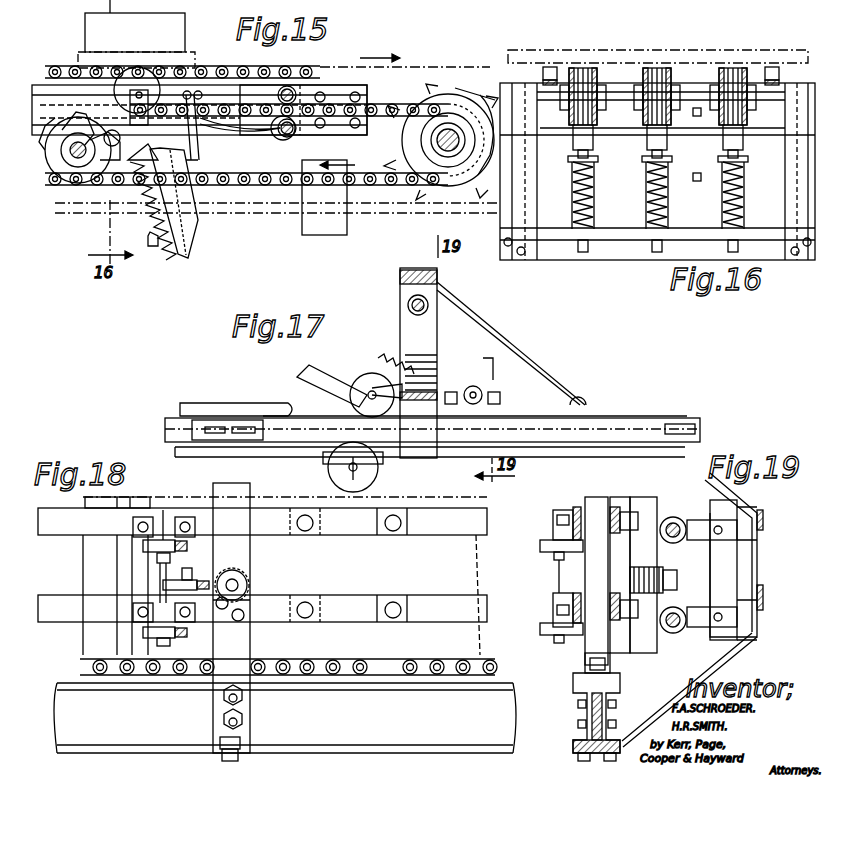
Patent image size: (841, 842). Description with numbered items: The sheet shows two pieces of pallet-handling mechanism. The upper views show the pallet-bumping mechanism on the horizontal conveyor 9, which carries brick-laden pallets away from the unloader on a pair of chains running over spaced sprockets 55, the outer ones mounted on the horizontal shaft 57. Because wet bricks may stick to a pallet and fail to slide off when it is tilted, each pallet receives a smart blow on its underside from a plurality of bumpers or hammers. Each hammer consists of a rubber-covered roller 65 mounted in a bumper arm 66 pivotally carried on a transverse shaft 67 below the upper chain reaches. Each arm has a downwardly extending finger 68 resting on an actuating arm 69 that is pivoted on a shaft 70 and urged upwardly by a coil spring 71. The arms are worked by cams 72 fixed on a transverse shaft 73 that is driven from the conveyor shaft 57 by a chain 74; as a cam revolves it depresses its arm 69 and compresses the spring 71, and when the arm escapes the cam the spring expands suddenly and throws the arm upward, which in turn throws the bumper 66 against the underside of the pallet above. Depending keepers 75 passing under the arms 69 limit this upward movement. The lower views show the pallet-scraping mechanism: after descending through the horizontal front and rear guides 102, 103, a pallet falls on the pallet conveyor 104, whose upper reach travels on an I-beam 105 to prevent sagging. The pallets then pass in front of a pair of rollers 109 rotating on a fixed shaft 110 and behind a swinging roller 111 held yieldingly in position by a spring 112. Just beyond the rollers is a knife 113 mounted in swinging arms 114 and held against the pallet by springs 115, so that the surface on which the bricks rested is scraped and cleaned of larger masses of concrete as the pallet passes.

In FIG. 15, the horizontal conveyor 9 is at (64, 68).
In FIG. 16, the horizontal conveyor 9 is at (538, 72).
In FIG. 15, the sprocket 55 is at (456, 85).
In FIG. 15, the horizontal shaft 57 is at (462, 150).
In FIG. 15, the roller 65 is at (155, 62).
In FIG. 16, the roller 65 is at (655, 68).
In FIG. 15, the bumper arm 66 is at (248, 86).
In FIG. 15, the transverse shaft 67 is at (286, 92).
In FIG. 15, the finger 68 is at (131, 100).
In FIG. 16, the finger 68 is at (616, 130).
In FIG. 15, the actuating arm 69 is at (242, 144).
In FIG. 16, the actuating arm 69 is at (570, 136).
In FIG. 15, the shaft 70 is at (264, 119).
In FIG. 15, the coil spring 71 is at (172, 216).
In FIG. 16, the coil spring 71 is at (594, 205).
In FIG. 15, the cam 72 is at (60, 180).
In FIG. 15, the transverse shaft 73 is at (72, 124).
In FIG. 15, the chain 74 is at (98, 186).
In FIG. 15, the depending keeper 75 is at (194, 152).
In FIG. 17, the horizontal front guide 102 is at (668, 406).
In FIG. 17, the horizontal rear guide 103 is at (556, 462).
In FIG. 18, the horizontal rear guide 103 is at (486, 532).
In FIG. 19, the horizontal rear guide 103 is at (578, 508).
In FIG. 18, the pallet conveyor 104 is at (494, 662).
In FIG. 19, the pallet conveyor 104 is at (584, 664).
In FIG. 18, the I-beam 105 is at (513, 716).
In FIG. 19, the I-beam 105 is at (588, 710).
In FIG. 17, the roller 109 is at (372, 472).
In FIG. 18, the roller 109 is at (143, 546).
In FIG. 19, the roller 109 is at (540, 580).
In FIG. 17, the fixed shaft 110 is at (348, 468).
In FIG. 18, the fixed shaft 110 is at (160, 570).
In FIG. 17, the swinging roller 111 is at (360, 386).
In FIG. 18, the swinging roller 111 is at (206, 580).
In FIG. 17, the spring 112 is at (437, 372).
In FIG. 19, the spring 112 is at (660, 572).
In FIG. 17, the knife 113 is at (298, 390).
In FIG. 17, the swinging arm 114 is at (386, 308).
In FIG. 19, the swinging arm 114 is at (694, 522).
In FIG. 17, the spring 115 is at (390, 294).
In FIG. 19, the spring 115 is at (654, 500).